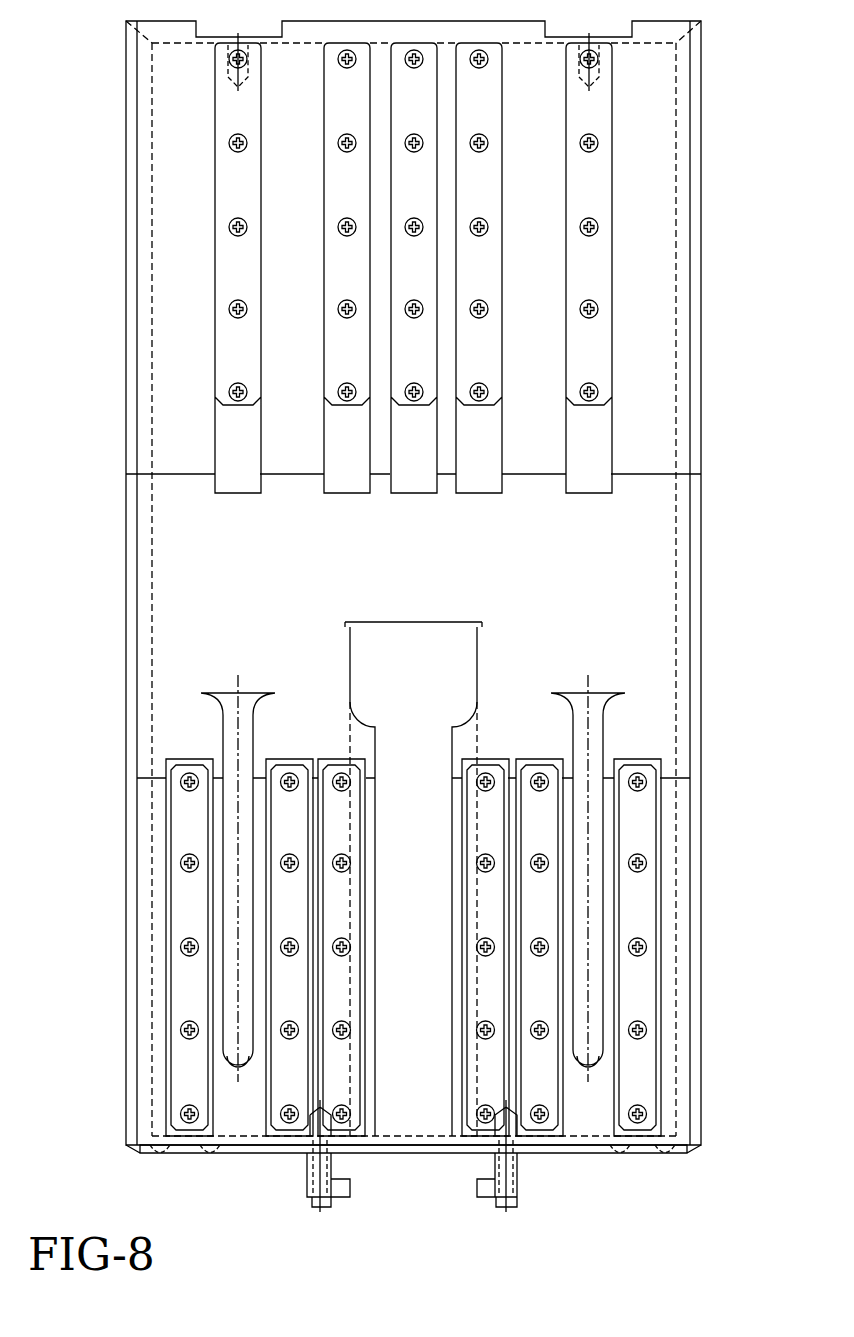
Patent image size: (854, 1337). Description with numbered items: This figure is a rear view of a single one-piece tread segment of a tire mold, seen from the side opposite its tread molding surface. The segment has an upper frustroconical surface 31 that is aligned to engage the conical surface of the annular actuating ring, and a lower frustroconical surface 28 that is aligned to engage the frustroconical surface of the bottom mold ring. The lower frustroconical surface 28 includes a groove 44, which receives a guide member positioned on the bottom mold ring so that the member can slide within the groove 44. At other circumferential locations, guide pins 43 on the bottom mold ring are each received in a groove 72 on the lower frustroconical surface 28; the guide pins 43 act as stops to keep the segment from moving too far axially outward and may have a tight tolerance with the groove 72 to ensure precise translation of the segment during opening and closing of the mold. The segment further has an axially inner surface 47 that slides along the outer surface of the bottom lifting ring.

The lower frustroconical surface 28 is at (150, 906).
The upper frustroconical surface 31 is at (180, 268).
The guide pin 43 is at (233, 860).
The groove 44 is at (428, 722).
The axially inner surface 47 is at (168, 1153).
The groove 72 is at (230, 1068).